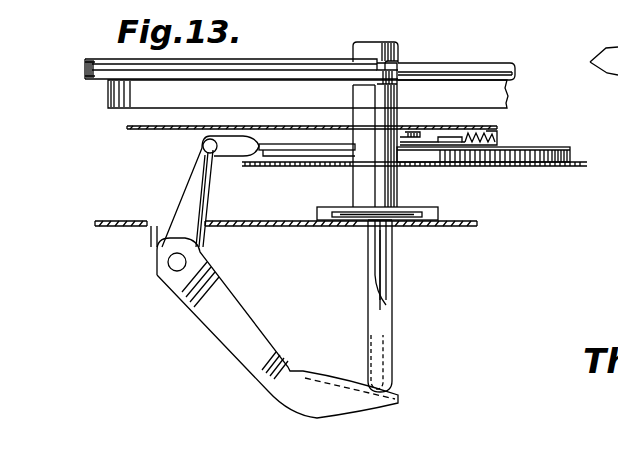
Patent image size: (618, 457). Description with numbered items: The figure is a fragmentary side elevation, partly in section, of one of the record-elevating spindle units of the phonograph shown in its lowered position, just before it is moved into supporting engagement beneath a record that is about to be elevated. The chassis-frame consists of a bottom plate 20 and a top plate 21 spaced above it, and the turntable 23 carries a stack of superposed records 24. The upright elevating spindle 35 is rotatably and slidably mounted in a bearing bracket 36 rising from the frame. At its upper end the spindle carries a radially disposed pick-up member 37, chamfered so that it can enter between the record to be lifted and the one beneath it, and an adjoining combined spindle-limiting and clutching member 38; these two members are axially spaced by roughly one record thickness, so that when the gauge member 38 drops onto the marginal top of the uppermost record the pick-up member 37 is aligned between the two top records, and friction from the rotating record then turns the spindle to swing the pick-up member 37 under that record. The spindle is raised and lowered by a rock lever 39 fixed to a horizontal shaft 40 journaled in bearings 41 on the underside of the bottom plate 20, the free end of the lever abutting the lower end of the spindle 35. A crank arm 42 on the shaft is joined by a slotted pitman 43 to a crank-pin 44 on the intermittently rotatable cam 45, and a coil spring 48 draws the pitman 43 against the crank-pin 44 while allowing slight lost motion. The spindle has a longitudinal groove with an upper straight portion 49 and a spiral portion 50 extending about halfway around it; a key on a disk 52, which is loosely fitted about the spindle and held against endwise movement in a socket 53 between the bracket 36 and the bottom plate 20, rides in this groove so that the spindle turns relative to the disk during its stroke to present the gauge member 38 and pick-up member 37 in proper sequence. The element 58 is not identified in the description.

The bottom plate 20 is at (103, 221).
The top plate 21 is at (127, 132).
The turntable 23 is at (308, 94).
The records 24 is at (85, 71).
The elevating spindle 35 is at (372, 68).
The bearing bracket 36 is at (385, 108).
The pick-up member 37 is at (468, 64).
The combined spindle-limiting and clutching member 38 is at (341, 63).
The rock lever 39 is at (243, 355).
The horizontal shaft 40 is at (186, 262).
The bearings 41 is at (160, 233).
The crank arm 42 is at (190, 178).
The pitman 43 is at (304, 157).
The crank-pin 44 is at (448, 143).
The cam 45 is at (572, 152).
The coil spring 48 is at (498, 131).
The straight portion of groove 49 is at (377, 246).
The spiral portion of groove 50 is at (388, 336).
The disk 52 is at (393, 224).
The socket 53 is at (410, 221).
The guide strip 58 is at (586, 167).